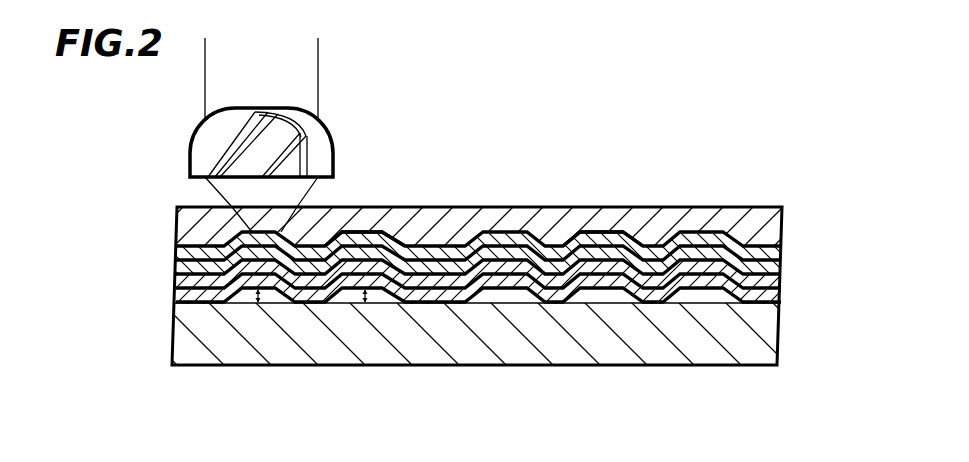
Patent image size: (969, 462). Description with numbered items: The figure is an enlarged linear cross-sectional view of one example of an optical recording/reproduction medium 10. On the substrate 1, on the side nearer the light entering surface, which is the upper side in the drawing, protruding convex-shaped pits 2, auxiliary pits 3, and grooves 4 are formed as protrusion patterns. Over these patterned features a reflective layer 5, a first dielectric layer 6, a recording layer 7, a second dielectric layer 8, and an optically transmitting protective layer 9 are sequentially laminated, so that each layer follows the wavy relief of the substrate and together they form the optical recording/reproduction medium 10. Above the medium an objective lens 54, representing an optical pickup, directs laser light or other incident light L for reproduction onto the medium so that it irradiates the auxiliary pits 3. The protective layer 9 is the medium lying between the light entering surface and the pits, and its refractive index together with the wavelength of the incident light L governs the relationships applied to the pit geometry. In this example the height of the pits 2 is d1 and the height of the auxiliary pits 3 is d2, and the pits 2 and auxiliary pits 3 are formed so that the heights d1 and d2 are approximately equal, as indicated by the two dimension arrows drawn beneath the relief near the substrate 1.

The optical recording/reproduction medium 10 is at (629, 92).
The substrate 1 is at (778, 342).
The pits 2 is at (374, 232).
The auxiliary pits 3 is at (278, 232).
The grooves 4 is at (601, 231).
The reflective layer 5 is at (775, 310).
The first dielectric layer 6 is at (770, 292).
The recording layer 7 is at (770, 268).
The second dielectric layer 8 is at (770, 249).
The protective layer 9 is at (770, 223).
The objective lens 54 is at (333, 132).
The incident light L is at (318, 72).
The height of the pits d1 is at (366, 306).
The height of the auxiliary pits d2 is at (260, 306).